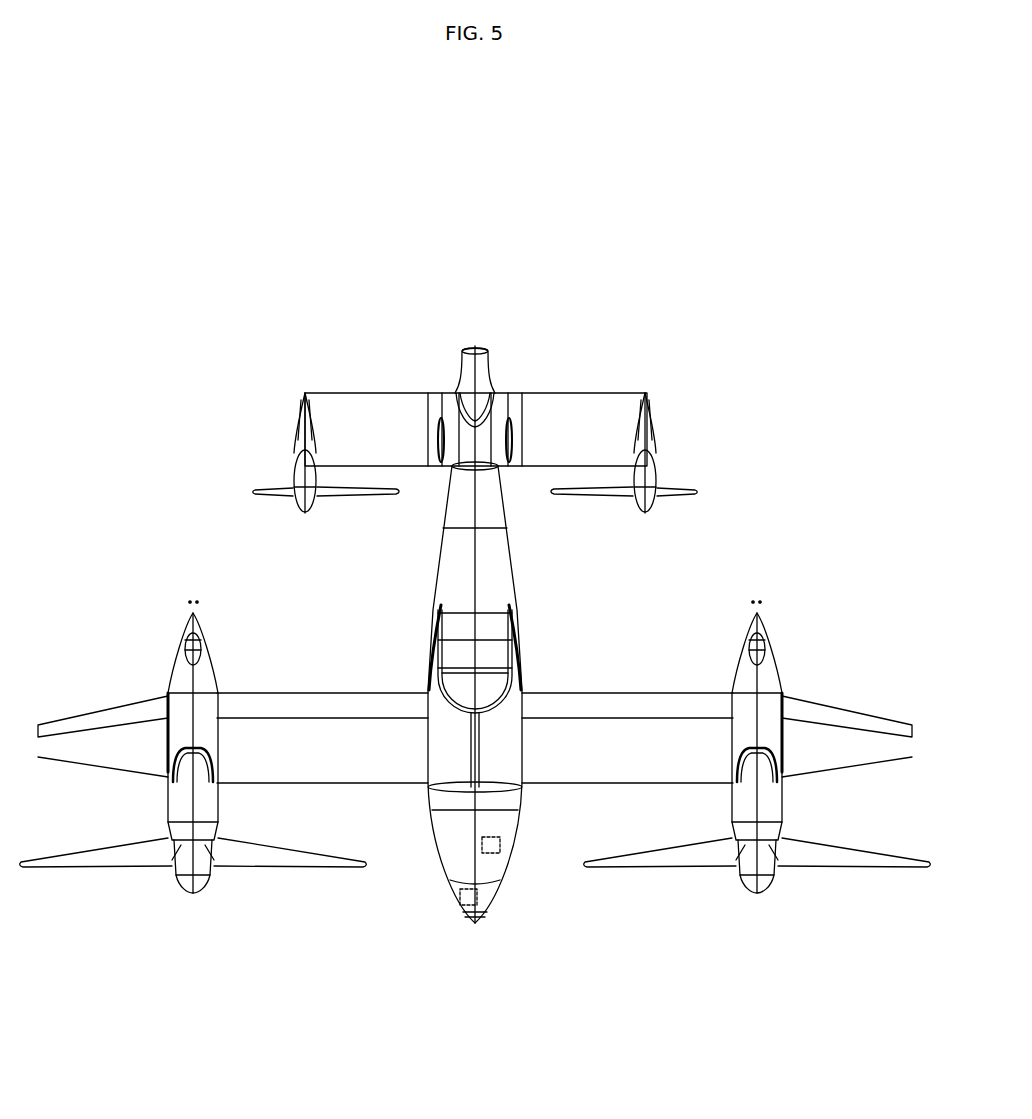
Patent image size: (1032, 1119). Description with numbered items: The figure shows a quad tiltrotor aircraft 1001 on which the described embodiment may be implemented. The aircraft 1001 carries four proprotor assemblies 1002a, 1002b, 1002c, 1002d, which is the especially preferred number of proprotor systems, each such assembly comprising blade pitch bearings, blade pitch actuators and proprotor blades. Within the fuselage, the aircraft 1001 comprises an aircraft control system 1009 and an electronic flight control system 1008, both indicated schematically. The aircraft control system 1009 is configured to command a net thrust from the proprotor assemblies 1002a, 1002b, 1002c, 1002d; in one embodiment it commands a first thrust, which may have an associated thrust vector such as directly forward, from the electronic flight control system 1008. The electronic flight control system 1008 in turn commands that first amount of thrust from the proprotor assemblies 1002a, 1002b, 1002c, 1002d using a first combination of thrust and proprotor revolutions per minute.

The aircraft 1001 is at (475, 571).
The proprotor assembly 1002a is at (772, 872).
The proprotor assembly 1002b is at (178, 872).
The proprotor assembly 1002c is at (652, 503).
The proprotor assembly 1002d is at (298, 500).
The electronic flight control system 1008 is at (452, 897).
The aircraft control system 1009 is at (503, 845).